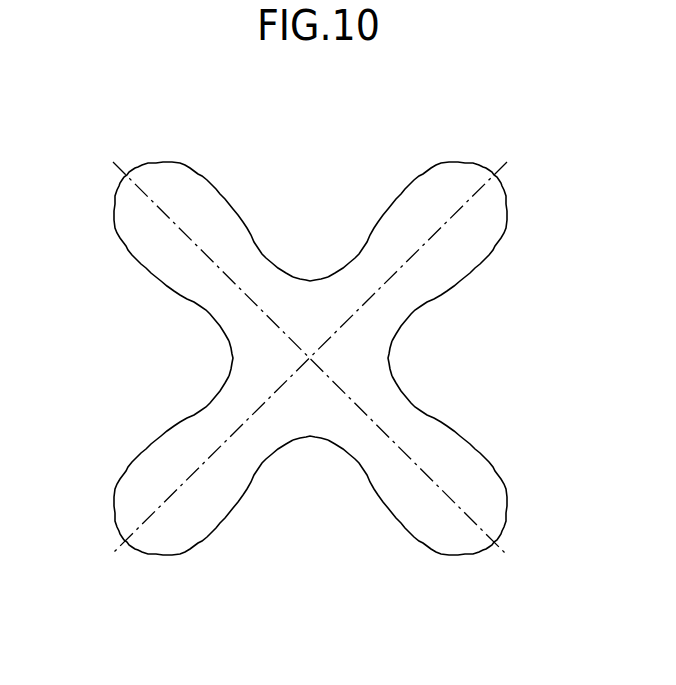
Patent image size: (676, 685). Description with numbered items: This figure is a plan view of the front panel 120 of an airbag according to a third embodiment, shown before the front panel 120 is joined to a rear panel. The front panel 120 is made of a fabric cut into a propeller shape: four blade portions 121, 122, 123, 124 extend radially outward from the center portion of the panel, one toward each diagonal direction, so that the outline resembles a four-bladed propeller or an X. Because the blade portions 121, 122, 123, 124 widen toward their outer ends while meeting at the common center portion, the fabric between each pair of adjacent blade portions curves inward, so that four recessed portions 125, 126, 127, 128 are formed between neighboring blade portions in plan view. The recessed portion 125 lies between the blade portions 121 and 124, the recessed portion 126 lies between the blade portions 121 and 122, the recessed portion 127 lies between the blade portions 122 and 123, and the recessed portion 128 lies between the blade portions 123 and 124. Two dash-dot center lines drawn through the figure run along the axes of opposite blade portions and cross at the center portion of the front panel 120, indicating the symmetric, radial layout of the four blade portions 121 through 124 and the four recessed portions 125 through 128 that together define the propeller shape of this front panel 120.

The front panel 120 is at (238, 165).
The blade portion 121 is at (162, 255).
The blade portion 122 is at (213, 508).
The blade portion 123 is at (465, 463).
The blade portion 124 is at (403, 210).
The recessed portion 125 is at (312, 297).
The recessed portion 126 is at (253, 355).
The recessed portion 127 is at (313, 440).
The recessed portion 128 is at (370, 355).